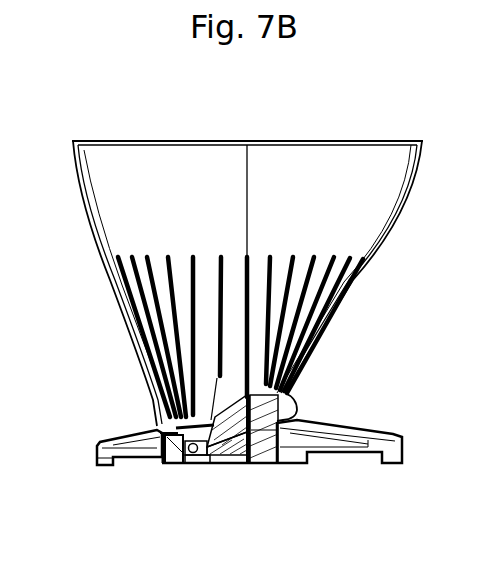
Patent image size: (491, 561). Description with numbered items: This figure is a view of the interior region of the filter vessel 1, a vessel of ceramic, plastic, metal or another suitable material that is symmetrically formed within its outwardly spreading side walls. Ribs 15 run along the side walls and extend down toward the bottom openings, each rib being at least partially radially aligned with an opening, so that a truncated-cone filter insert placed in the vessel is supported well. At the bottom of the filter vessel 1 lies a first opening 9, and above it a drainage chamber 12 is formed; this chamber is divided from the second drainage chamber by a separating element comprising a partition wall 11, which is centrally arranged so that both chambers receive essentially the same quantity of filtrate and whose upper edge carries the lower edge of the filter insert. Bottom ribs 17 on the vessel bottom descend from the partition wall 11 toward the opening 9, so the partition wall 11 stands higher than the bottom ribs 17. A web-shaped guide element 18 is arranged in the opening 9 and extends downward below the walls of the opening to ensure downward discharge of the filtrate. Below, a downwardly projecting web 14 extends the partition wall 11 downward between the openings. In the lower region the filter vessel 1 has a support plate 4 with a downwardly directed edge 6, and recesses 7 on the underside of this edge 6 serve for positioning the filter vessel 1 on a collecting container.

The filter vessel 1 is at (100, 170).
The ribs 15 is at (137, 265).
The drainage chamber 12 is at (165, 412).
The support plate 4 is at (113, 436).
The downwardly directed edge 6 is at (98, 458).
The recesses 7 is at (117, 462).
The first opening 9 is at (189, 452).
The web-shaped guide element 18 is at (195, 455).
The bottom ribs 17 is at (222, 416).
The downwardly projecting web 14 is at (262, 447).
The partition wall 11 is at (266, 402).